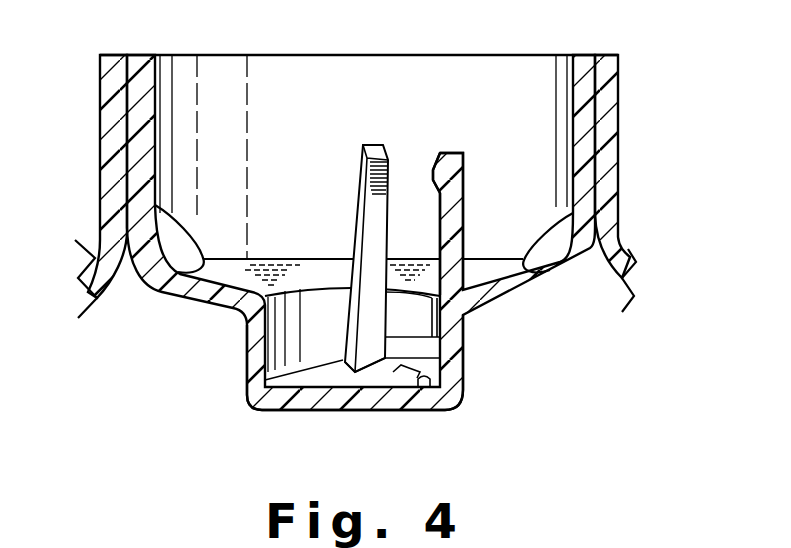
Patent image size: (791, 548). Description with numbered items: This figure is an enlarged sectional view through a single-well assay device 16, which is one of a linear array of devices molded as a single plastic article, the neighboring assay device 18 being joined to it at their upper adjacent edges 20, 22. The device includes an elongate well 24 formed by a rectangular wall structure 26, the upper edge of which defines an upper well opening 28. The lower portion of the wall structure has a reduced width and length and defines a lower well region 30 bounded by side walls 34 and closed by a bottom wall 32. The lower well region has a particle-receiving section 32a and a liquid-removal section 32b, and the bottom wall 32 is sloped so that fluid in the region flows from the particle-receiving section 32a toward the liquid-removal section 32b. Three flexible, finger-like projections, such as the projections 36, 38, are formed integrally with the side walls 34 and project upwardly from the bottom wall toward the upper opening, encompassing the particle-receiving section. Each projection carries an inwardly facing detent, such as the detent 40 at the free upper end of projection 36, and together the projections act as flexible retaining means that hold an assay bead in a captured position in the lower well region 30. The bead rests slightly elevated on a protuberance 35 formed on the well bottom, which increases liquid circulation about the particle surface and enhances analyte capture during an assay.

The assay device 16 is at (163, 310).
The assay device 18 is at (637, 228).
The adjacent edge 20 is at (585, 117).
The adjacent edge 22 is at (620, 157).
The elongate well 24 is at (300, 90).
The wall structure 26 is at (143, 72).
The upper well opening 28 is at (443, 52).
The lower well region 30 is at (410, 318).
The bottom wall 32 is at (425, 372).
The particle-receiving section 32a is at (377, 383).
The liquid-removal section 32b is at (332, 372).
The side walls 34 is at (247, 378).
The protuberance 35 is at (418, 375).
The projection 36 is at (448, 205).
The projection 38 is at (360, 177).
The detent 40 is at (435, 165).